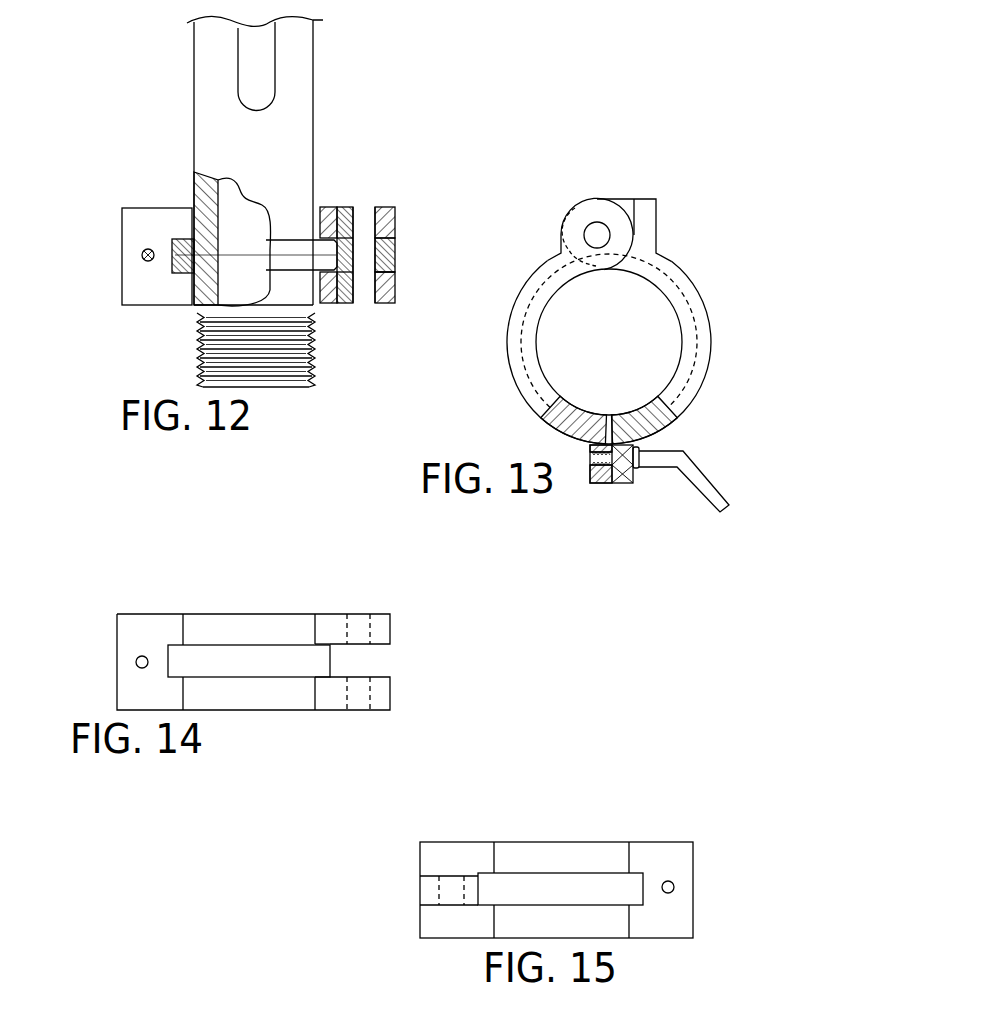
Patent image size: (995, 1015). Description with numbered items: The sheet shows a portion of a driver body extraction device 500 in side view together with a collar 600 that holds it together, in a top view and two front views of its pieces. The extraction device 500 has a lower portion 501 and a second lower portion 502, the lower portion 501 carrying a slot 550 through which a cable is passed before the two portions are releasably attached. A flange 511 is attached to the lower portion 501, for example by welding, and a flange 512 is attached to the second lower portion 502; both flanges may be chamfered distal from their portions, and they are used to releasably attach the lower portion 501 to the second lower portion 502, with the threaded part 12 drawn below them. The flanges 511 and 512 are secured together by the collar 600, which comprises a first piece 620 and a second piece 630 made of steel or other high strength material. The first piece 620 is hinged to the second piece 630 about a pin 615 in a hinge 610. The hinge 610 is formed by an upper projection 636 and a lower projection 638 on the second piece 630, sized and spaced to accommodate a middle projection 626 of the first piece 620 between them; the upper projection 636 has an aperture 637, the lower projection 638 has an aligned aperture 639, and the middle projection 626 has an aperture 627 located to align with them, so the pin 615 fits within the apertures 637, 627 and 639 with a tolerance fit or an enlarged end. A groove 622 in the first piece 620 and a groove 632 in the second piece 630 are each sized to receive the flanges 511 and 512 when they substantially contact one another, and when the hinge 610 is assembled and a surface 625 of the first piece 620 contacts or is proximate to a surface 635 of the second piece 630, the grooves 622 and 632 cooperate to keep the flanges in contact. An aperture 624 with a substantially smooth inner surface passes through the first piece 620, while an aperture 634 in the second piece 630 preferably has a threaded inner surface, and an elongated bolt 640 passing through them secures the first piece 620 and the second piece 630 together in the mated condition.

In FIG. 12, the threaded shaft portion 12 is at (198, 359).
In FIG. 12, the driver body extraction device 500 is at (193, 122).
In FIG. 12, the lower portion 501 is at (313, 137).
In FIG. 12, the second lower portion 502 is at (210, 312).
In FIG. 12, the flange 511 is at (342, 207).
In FIG. 12, the flange 512 is at (341, 278).
In FIG. 12, the slot 550 is at (275, 62).
In FIG. 13, the collar 600 is at (698, 203).
In FIG. 13, the hinge 610 is at (622, 186).
In FIG. 12, the pin 615 is at (380, 236).
In FIG. 13, the pin 615 is at (594, 232).
In FIG. 13, the first piece 620 is at (668, 347).
In FIG. 15, the first piece 620 is at (557, 867).
In FIG. 13, the groove 622 is at (642, 415).
In FIG. 15, the groove 622 is at (563, 889).
In FIG. 15, the aperture 624 is at (674, 887).
In FIG. 15, the surface 625 is at (677, 860).
In FIG. 12, the middle projection 626 is at (397, 258).
In FIG. 15, the middle projection 626 is at (440, 905).
In FIG. 12, the aperture 627 is at (397, 266).
In FIG. 15, the aperture 627 is at (440, 892).
In FIG. 12, the second piece 630 is at (191, 228).
In FIG. 13, the second piece 630 is at (555, 347).
In FIG. 14, the second piece 630 is at (242, 639).
In FIG. 12, the groove 632 is at (178, 240).
In FIG. 13, the groove 632 is at (578, 415).
In FIG. 14, the groove 632 is at (250, 660).
In FIG. 12, the aperture 634 is at (142, 251).
In FIG. 14, the aperture 634 is at (136, 662).
In FIG. 12, the surface 635 is at (137, 289).
In FIG. 14, the surface 635 is at (132, 695).
In FIG. 12, the upper projection 636 is at (397, 210).
In FIG. 14, the upper projection 636 is at (390, 627).
In FIG. 12, the aperture 637 is at (367, 240).
In FIG. 14, the aperture 637 is at (362, 627).
In FIG. 12, the lower projection 638 is at (397, 290).
In FIG. 14, the lower projection 638 is at (390, 693).
In FIG. 12, the aperture 639 is at (368, 270).
In FIG. 14, the aperture 639 is at (368, 693).
In FIG. 12, the elongated bolt 640 is at (142, 255).
In FIG. 13, the elongated bolt 640 is at (703, 478).